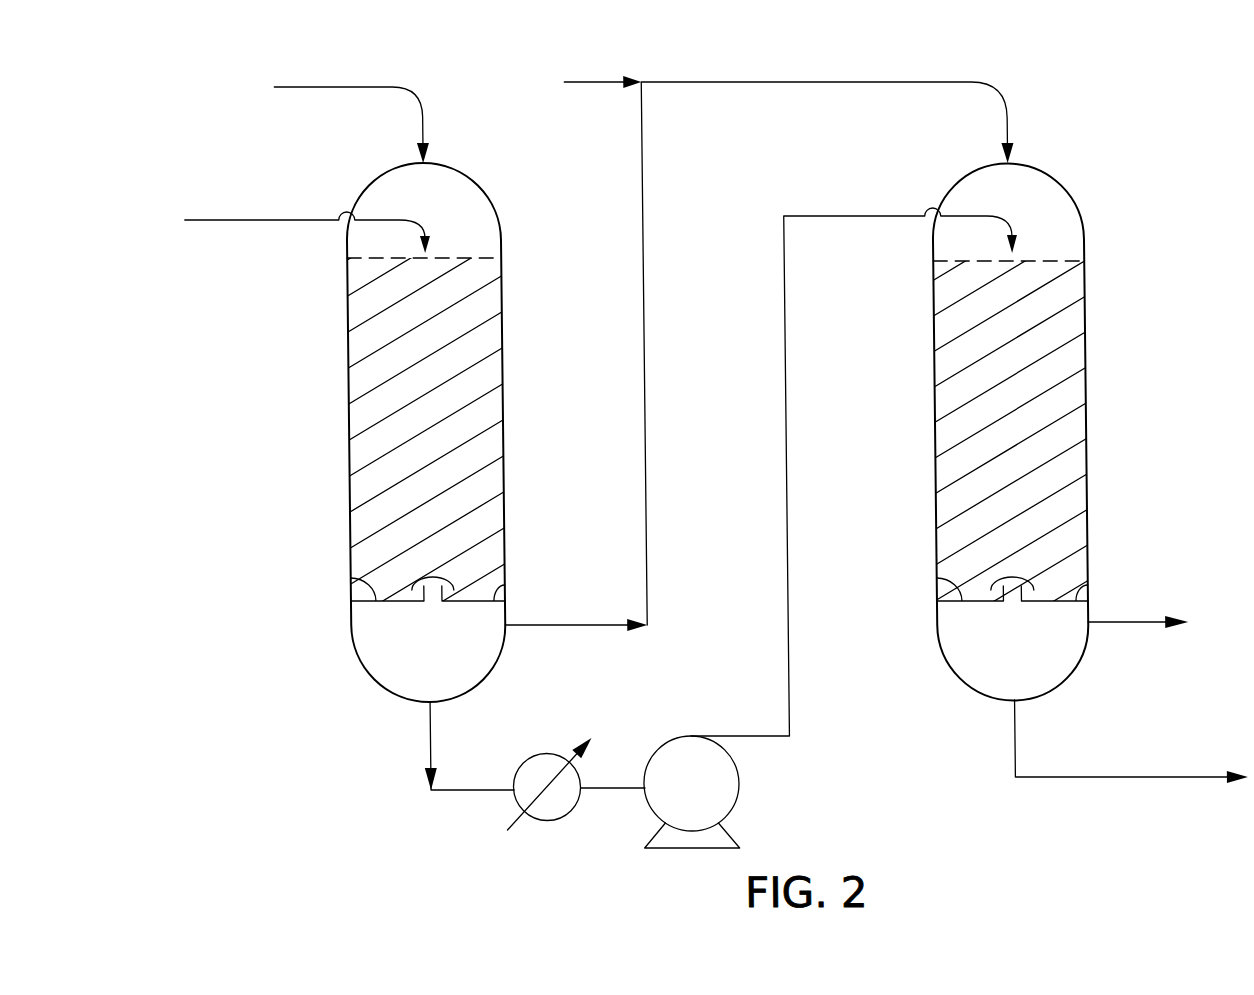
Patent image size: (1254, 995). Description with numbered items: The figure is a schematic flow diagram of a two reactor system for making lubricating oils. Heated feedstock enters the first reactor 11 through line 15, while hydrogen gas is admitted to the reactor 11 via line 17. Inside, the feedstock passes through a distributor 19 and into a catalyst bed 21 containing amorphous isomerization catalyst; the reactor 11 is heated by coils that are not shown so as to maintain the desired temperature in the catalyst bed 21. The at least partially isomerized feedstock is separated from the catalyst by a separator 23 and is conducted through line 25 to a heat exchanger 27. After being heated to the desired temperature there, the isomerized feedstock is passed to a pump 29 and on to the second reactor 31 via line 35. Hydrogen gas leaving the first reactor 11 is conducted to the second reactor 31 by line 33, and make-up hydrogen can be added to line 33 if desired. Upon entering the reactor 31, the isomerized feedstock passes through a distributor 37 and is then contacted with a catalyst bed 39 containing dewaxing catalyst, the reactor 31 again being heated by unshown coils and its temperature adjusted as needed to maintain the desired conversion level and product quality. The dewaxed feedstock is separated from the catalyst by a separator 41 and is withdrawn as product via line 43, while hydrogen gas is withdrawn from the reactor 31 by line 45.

The reactor 11 is at (347, 311).
The line 15 is at (208, 222).
The line 17 is at (372, 85).
The distributor 19 is at (472, 256).
The catalyst bed 21 is at (480, 334).
The separator 23 is at (347, 580).
The line 25 is at (425, 740).
The heat exchanger 27 is at (541, 754).
The pump 29 is at (733, 783).
The reactor 31 is at (1084, 313).
The line 33 is at (643, 210).
The line 35 is at (784, 463).
The distributor 37 is at (1040, 261).
The catalyst bed 39 is at (1052, 427).
The separator 41 is at (1084, 583).
The line 43 is at (1087, 778).
The line 45 is at (1140, 623).